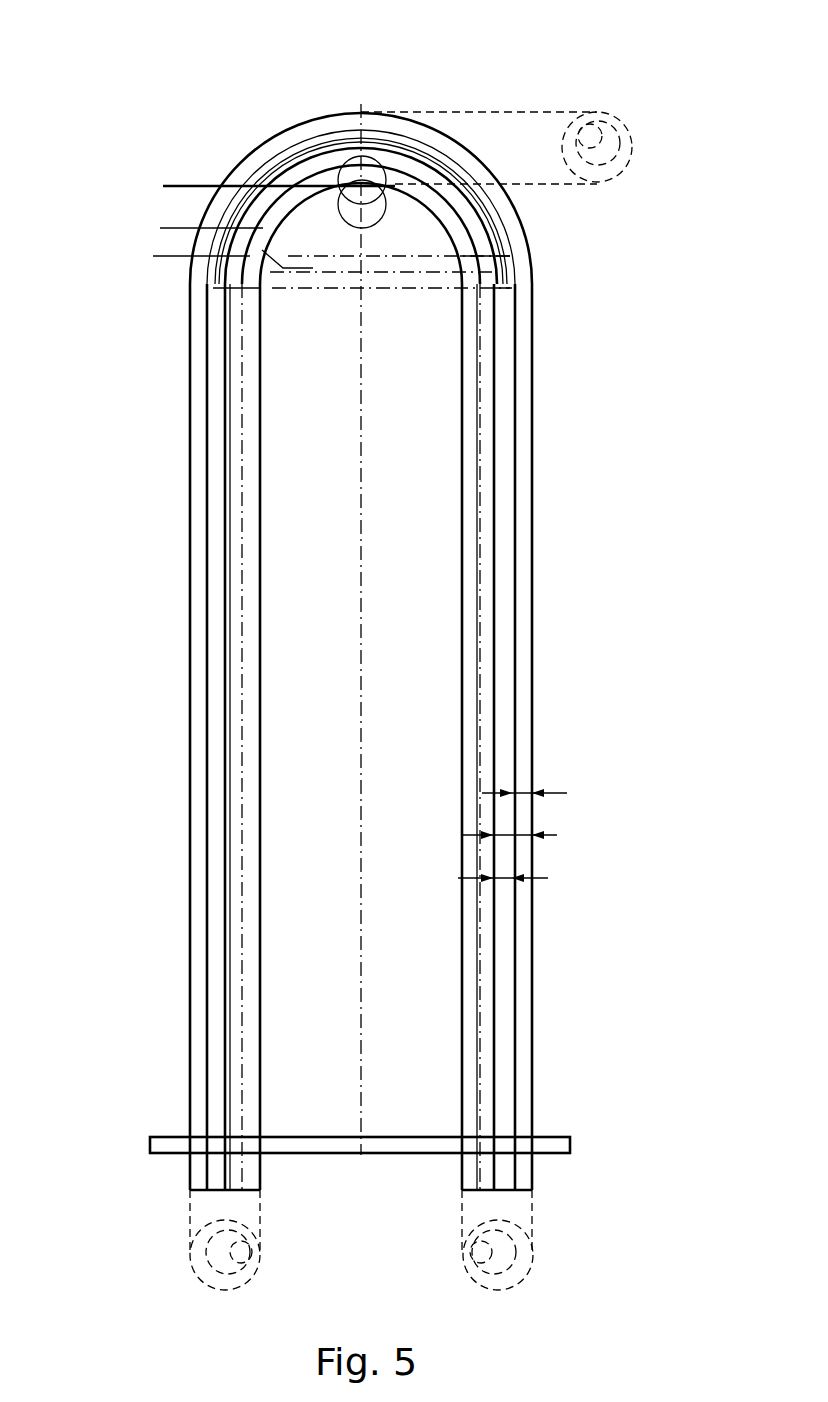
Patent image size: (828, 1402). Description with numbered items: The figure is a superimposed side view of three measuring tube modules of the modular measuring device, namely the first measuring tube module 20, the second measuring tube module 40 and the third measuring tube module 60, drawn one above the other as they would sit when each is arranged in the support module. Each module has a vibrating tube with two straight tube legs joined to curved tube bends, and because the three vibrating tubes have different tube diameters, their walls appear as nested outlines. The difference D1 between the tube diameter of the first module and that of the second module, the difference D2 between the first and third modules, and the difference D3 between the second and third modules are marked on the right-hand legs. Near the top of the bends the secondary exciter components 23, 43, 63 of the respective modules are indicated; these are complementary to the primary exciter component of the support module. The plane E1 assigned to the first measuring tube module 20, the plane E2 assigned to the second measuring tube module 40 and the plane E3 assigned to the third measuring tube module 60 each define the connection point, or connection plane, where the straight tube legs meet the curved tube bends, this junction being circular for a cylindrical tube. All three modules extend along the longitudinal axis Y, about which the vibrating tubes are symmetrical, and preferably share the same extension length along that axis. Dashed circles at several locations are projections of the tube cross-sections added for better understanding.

The first measuring tube module 20 is at (186, 689).
The secondary exciter component 23 is at (263, 197).
The second measuring tube module 40 is at (203, 820).
The secondary exciter component 43 is at (307, 173).
The third measuring tube module 60 is at (221, 943).
The secondary exciter component 63 is at (332, 163).
The plane E1 is at (187, 256).
The plane E2 is at (196, 229).
The plane E3 is at (264, 188).
The difference D1 is at (527, 800).
The difference D2 is at (517, 842).
The difference D3 is at (505, 885).
The longitudinal axis Y is at (362, 1093).